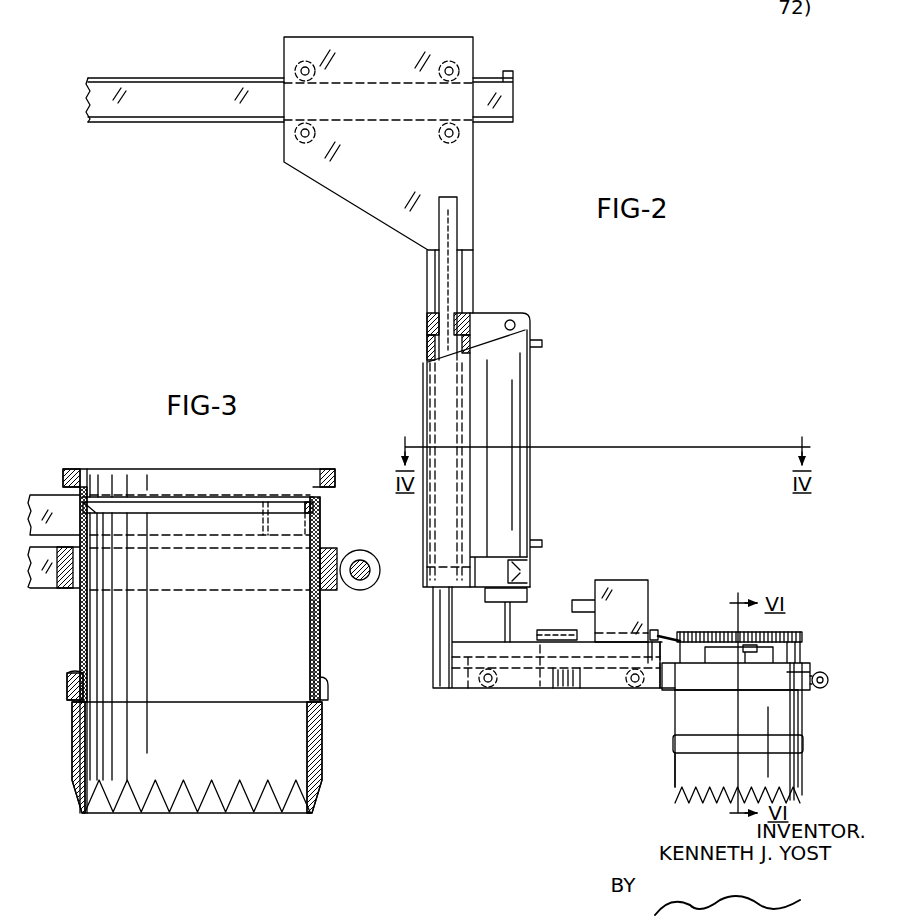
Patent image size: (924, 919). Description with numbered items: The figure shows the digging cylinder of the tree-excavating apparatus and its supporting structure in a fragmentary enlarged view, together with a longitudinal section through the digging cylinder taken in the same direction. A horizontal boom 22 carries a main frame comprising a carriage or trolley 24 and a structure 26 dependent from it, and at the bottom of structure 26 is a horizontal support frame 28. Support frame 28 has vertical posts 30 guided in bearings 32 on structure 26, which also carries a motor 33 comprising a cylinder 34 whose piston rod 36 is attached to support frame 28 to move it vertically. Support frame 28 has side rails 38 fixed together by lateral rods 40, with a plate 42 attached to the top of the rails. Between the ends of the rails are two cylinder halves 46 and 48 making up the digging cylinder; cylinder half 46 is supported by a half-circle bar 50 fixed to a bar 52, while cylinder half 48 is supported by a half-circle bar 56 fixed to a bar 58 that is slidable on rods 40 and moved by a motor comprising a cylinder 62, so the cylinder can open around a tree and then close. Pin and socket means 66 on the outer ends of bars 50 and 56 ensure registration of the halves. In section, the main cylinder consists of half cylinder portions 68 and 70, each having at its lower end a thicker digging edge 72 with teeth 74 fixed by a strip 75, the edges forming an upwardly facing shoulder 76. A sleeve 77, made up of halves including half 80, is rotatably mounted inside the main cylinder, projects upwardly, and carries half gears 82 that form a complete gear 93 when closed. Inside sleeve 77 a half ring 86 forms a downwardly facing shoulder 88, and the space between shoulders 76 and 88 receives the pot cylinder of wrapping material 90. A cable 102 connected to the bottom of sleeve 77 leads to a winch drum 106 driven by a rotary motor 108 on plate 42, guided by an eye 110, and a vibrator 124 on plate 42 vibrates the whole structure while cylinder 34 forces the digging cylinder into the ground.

In FIG. 2, the horizontal boom 22 is at (207, 107).
In FIG. 2, the carriage or trolley 24 is at (392, 44).
In FIG. 2, the structure 26 is at (473, 285).
In FIG. 2, the horizontal support frame 28 is at (478, 719).
In FIG. 2, the vertical post 30 is at (445, 270).
In FIG. 2, the bearing 32 is at (428, 323).
In FIG. 2, the motor 33 is at (541, 400).
In FIG. 2, the cylinder 34 is at (513, 483).
In FIG. 2, the rod 36 is at (503, 612).
In FIG. 2, the side rail 38 is at (470, 640).
In FIG. 2, the lateral rod 40 is at (483, 692).
In FIG. 2, the plate 42 is at (445, 653).
In FIG. 2, the cylinder half 46 is at (658, 733).
In FIG. 3, the cylinder half 48 is at (94, 844).
In FIG. 2, the bar 50 is at (783, 690).
In FIG. 2, the bar 52 is at (663, 683).
In FIG. 3, the bar 56 is at (330, 593).
In FIG. 3, the bar 58 is at (50, 575).
In FIG. 2, the cylinder 62 is at (575, 693).
In FIG. 2, the pin and socket means 66 is at (836, 657).
In FIG. 3, the pin and socket means 66 is at (362, 543).
In FIG. 2, the half cylinder portion 68 is at (700, 724).
In FIG. 3, the half cylinder portion 70 is at (325, 653).
In FIG. 2, the half cylinder digging edge 72 is at (688, 770).
In FIG. 3, the half cylinder digging edge 72 is at (322, 770).
In FIG. 2, the teeth 74 is at (702, 798).
In FIG. 3, the teeth 74 is at (278, 807).
In FIG. 2, the strip 75 is at (787, 743).
In FIG. 3, the strip 75 is at (328, 700).
In FIG. 3, the upwardly facing shoulder 76 is at (307, 700).
In FIG. 3, the sleeve 77 is at (308, 627).
In FIG. 3, the sleeve half 80 is at (313, 665).
In FIG. 3, the half gear 82 is at (80, 469).
In FIG. 3, the half ring 86 is at (230, 508).
In FIG. 3, the downwardly facing shoulder 88 is at (305, 513).
In FIG. 3, the sleeve of wrapping material 90 is at (85, 630).
In FIG. 2, the gear 93 is at (796, 629).
In FIG. 2, the cable 102 is at (668, 632).
In FIG. 3, the cable 102 is at (70, 700).
In FIG. 2, the winch drum 106 is at (567, 628).
In FIG. 2, the rotary motor 108 is at (542, 658).
In FIG. 2, the guide roller or eye 110 is at (655, 630).
In FIG. 2, the vibrator 124 is at (625, 581).